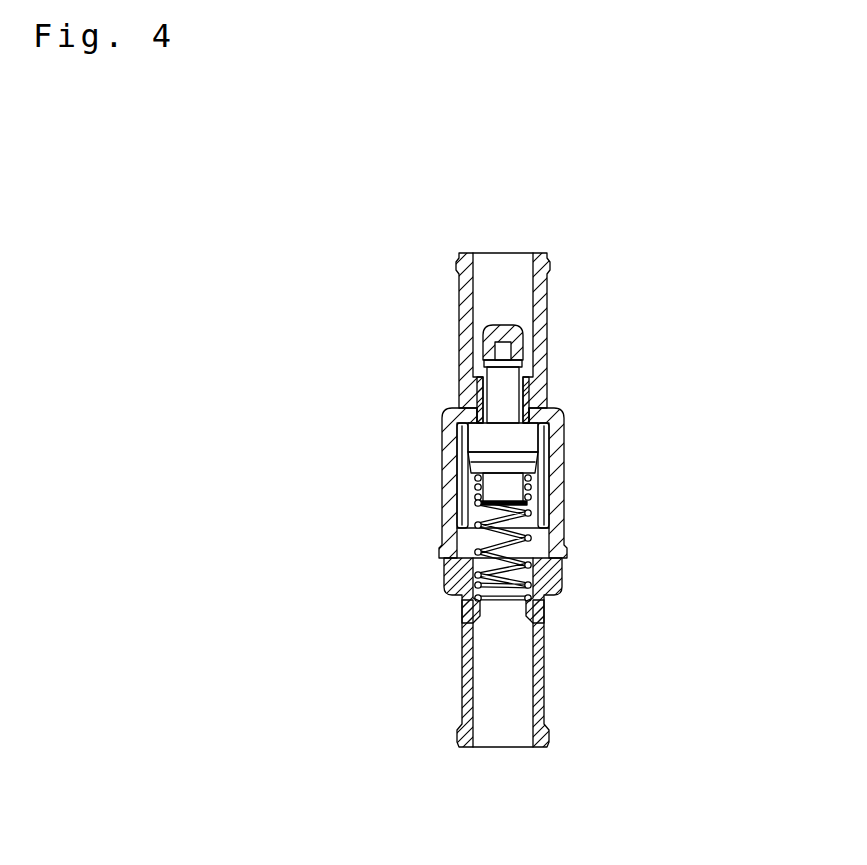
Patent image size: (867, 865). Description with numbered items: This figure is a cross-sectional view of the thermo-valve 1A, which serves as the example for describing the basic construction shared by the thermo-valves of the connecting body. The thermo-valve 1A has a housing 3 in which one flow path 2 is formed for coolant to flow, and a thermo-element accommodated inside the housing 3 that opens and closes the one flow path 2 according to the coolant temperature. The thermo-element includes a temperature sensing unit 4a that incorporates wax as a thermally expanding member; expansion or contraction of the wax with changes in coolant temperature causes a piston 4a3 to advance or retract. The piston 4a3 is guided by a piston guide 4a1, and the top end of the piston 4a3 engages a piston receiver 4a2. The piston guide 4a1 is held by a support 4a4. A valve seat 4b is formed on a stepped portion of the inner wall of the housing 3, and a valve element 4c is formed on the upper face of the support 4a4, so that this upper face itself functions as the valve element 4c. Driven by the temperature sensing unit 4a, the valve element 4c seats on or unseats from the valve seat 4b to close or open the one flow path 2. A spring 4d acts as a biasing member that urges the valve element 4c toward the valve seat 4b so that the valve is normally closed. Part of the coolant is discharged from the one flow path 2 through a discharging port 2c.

The thermo-valve 1A is at (428, 354).
The one flow path 2 is at (477, 284).
The discharging port 2c is at (530, 708).
The housing 3 is at (520, 385).
The temperature sensing unit 4a is at (509, 495).
The piston guide 4a1 is at (511, 405).
The piston receiver 4a2 is at (516, 324).
The piston 4a3 is at (509, 350).
The support 4a4 is at (521, 438).
The valve seat 4b is at (459, 408).
The valve element 4c is at (459, 431).
The spring 4d is at (560, 562).